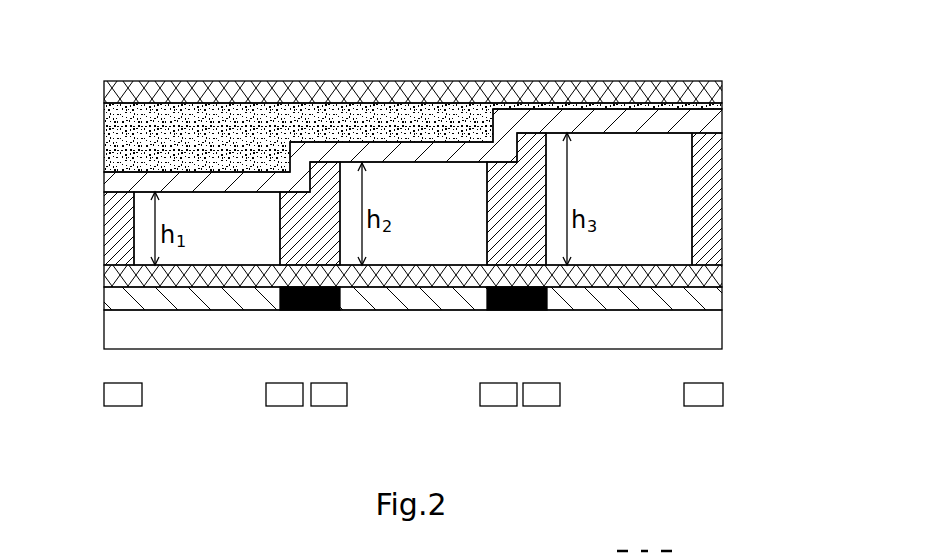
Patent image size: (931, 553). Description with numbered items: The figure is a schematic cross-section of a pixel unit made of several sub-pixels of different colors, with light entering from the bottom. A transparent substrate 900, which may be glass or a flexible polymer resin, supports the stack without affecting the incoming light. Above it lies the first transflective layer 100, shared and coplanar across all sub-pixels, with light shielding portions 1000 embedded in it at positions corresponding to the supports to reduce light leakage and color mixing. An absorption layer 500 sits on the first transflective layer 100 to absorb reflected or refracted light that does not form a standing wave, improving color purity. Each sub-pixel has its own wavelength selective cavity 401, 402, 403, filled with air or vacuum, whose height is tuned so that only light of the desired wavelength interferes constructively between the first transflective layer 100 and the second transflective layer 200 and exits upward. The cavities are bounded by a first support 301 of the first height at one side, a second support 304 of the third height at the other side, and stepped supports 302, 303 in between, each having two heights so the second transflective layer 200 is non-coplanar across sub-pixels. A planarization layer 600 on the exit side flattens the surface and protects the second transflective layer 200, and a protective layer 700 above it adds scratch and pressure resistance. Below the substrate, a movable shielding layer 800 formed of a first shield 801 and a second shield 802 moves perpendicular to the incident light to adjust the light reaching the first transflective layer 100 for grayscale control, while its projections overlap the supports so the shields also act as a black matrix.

The first transflective layer 100 is at (708, 298).
The second transflective layer 200 is at (715, 123).
The first support 301 is at (115, 225).
The support 302 is at (323, 193).
The support 303 is at (531, 197).
The second support 304 is at (712, 204).
The wavelength selective cavity 401 is at (200, 223).
The wavelength selective cavity 402 is at (413, 213).
The wavelength selective cavity 403 is at (619, 205).
The absorption layer 500 is at (112, 279).
The planarization layer 600 is at (110, 134).
The protective layer 700 is at (108, 89).
The movable shielding layer 800 is at (375, 425).
The first shield 801 is at (121, 392).
The second shield 802 is at (283, 392).
The transparent substrate 900 is at (700, 331).
The light shielding portions 1000 is at (309, 310).